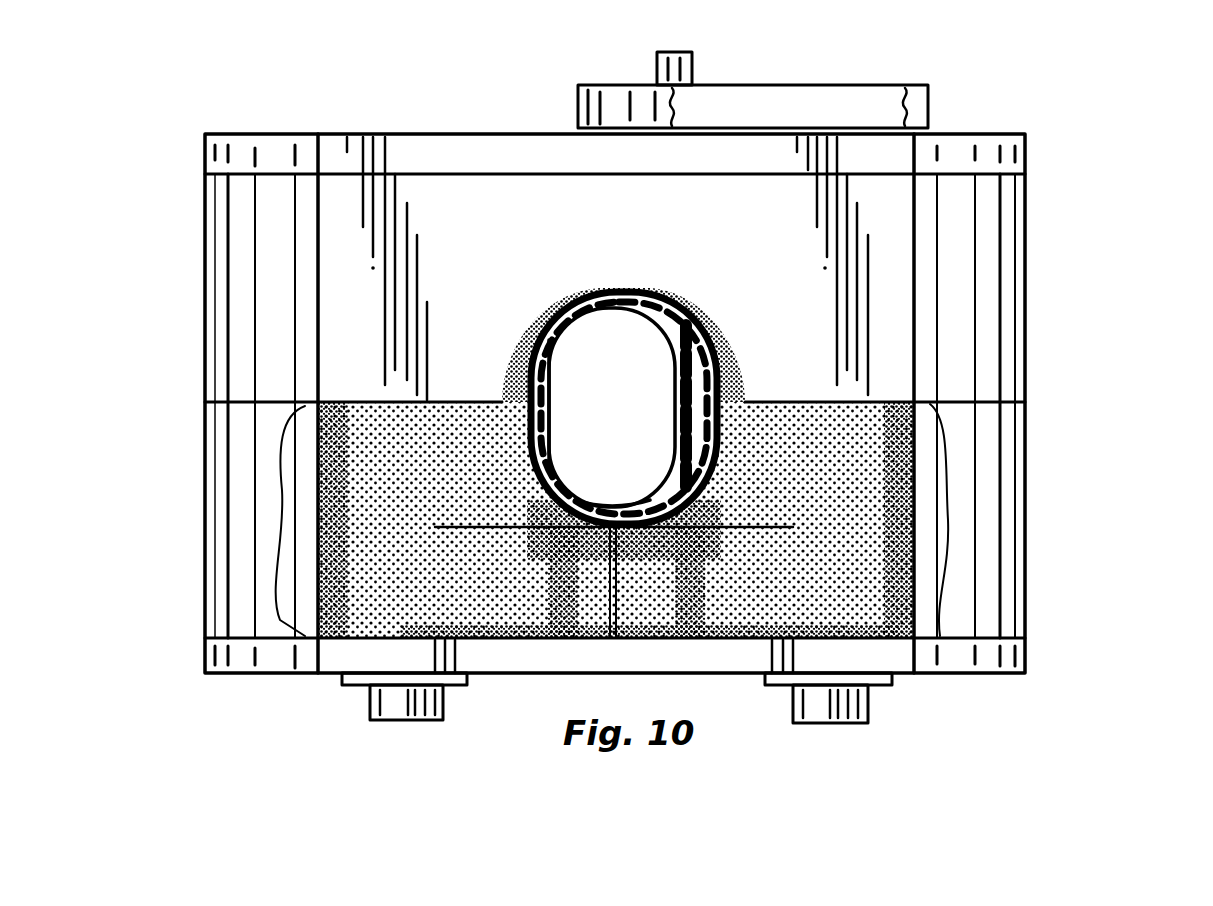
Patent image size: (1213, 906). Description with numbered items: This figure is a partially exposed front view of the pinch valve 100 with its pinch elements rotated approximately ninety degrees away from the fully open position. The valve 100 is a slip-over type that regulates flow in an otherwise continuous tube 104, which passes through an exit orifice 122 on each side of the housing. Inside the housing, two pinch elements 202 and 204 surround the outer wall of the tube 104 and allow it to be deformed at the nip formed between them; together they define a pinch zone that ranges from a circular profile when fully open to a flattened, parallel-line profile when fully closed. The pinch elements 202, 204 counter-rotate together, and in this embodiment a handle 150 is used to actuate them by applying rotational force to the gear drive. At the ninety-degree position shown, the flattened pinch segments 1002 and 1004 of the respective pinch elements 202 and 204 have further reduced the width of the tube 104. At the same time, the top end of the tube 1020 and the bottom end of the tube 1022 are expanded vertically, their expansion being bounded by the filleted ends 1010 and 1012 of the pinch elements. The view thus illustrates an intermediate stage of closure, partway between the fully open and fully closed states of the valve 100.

The valve 100 is at (1057, 212).
The handle 150 is at (812, 100).
The tube 104 is at (622, 297).
The exit orifice 122 is at (698, 327).
The top end of the tube 1020 is at (603, 312).
The flattened pinch segment 1004 is at (549, 415).
The flattened pinch segment 1002 is at (672, 420).
The bottom end of the tube 1022 is at (607, 505).
The filleted end 1012 is at (562, 520).
The filleted end 1010 is at (690, 527).
The pinch element 204 is at (340, 643).
The pinch element 202 is at (903, 647).